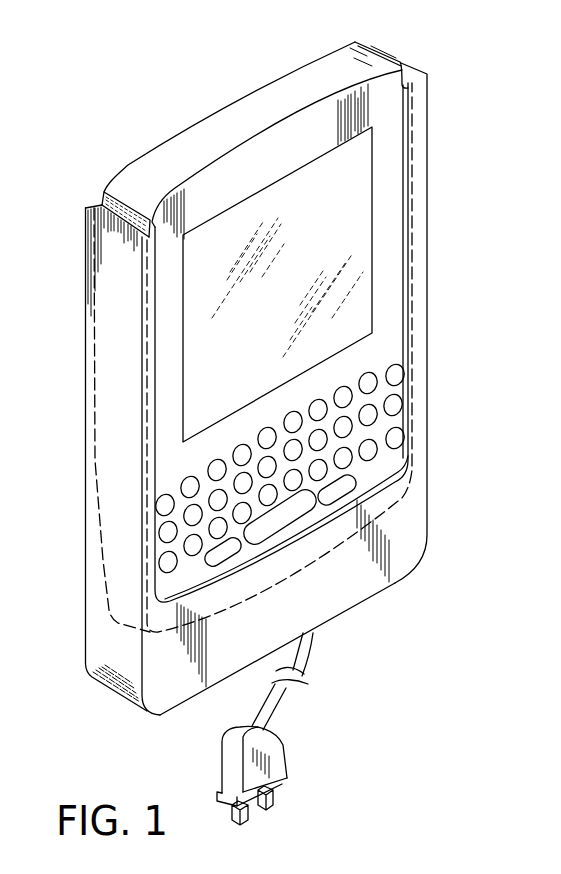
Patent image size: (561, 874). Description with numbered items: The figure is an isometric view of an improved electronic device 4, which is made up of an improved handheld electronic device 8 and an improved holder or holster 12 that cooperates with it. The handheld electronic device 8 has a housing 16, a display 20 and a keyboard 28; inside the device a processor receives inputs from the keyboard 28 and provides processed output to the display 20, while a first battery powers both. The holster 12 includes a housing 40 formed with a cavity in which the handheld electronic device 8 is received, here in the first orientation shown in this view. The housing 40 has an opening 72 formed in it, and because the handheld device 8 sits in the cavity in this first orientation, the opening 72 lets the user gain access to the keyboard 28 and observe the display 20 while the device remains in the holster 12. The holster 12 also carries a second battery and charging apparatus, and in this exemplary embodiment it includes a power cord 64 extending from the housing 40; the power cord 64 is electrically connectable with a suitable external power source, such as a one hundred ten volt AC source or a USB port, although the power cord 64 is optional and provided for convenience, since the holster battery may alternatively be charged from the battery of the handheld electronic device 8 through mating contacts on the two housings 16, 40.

The electronic device 4 is at (453, 124).
The handheld electronic device 8 is at (94, 172).
The holster 12 is at (397, 592).
The housing 16 is at (233, 109).
The display 20 is at (312, 158).
The keyboard 28 is at (403, 387).
The housing 40 is at (422, 512).
The power cord 64 is at (278, 703).
The opening 72 is at (403, 148).